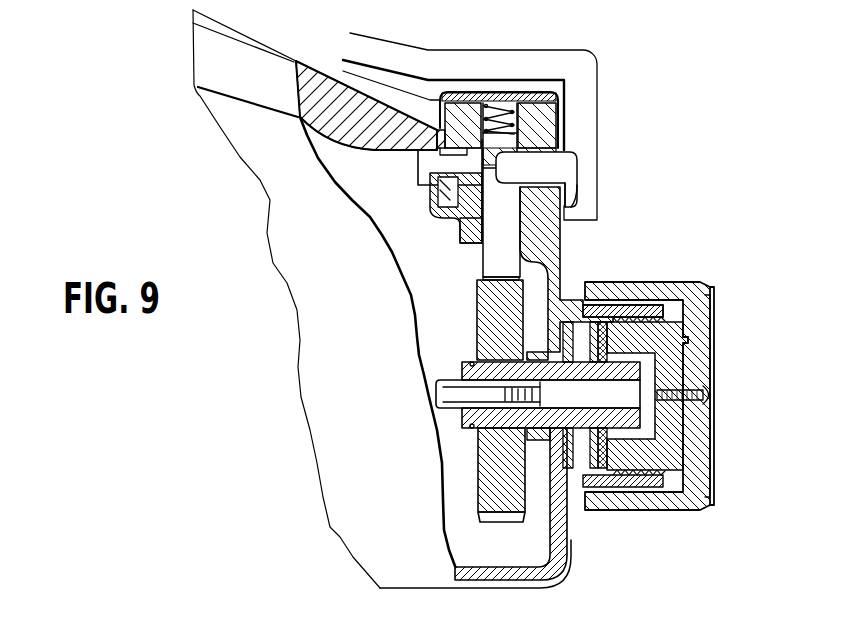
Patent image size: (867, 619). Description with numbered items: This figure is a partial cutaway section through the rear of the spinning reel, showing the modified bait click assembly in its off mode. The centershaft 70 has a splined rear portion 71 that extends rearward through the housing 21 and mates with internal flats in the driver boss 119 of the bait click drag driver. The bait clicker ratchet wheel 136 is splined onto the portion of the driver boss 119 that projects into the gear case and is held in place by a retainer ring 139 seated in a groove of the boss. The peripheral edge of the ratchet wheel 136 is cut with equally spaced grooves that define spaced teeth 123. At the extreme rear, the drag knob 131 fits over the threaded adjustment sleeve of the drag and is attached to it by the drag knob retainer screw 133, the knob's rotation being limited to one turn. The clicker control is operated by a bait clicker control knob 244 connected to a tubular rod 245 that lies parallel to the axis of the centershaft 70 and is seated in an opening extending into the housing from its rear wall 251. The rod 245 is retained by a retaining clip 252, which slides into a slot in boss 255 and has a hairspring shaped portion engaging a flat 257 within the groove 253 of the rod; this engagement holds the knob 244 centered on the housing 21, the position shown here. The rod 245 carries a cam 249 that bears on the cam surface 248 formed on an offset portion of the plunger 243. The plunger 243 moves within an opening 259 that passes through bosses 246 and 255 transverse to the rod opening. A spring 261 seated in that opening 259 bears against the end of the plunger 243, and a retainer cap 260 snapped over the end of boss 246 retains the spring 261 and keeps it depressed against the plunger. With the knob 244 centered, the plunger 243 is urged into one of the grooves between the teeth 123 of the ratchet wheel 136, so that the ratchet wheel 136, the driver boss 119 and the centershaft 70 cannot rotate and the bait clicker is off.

The housing 21 is at (553, 583).
The centershaft 70 is at (440, 388).
The splined rear portion 71 is at (468, 392).
The driver boss 119 is at (493, 430).
The spaced teeth 123 is at (503, 518).
The drag knob 131 is at (680, 288).
The drag knob retainer screw 133 is at (712, 395).
The bait clicker ratchet wheel 136 is at (483, 477).
The retainer ring 139 is at (470, 363).
The plunger 243 is at (508, 262).
The bait clicker control knob 244 is at (580, 62).
The tubular rod 245 is at (553, 163).
The boss 246 is at (467, 108).
The cam surface 248 is at (572, 182).
The cam 249 is at (520, 140).
The rear wall 251 is at (562, 240).
The retaining clip 252 is at (470, 236).
The groove 253 is at (445, 197).
The boss 255 is at (476, 241).
The flat 257 is at (430, 178).
The opening 259 is at (493, 271).
The retainer cap 260 is at (492, 90).
The spring 261 is at (553, 110).